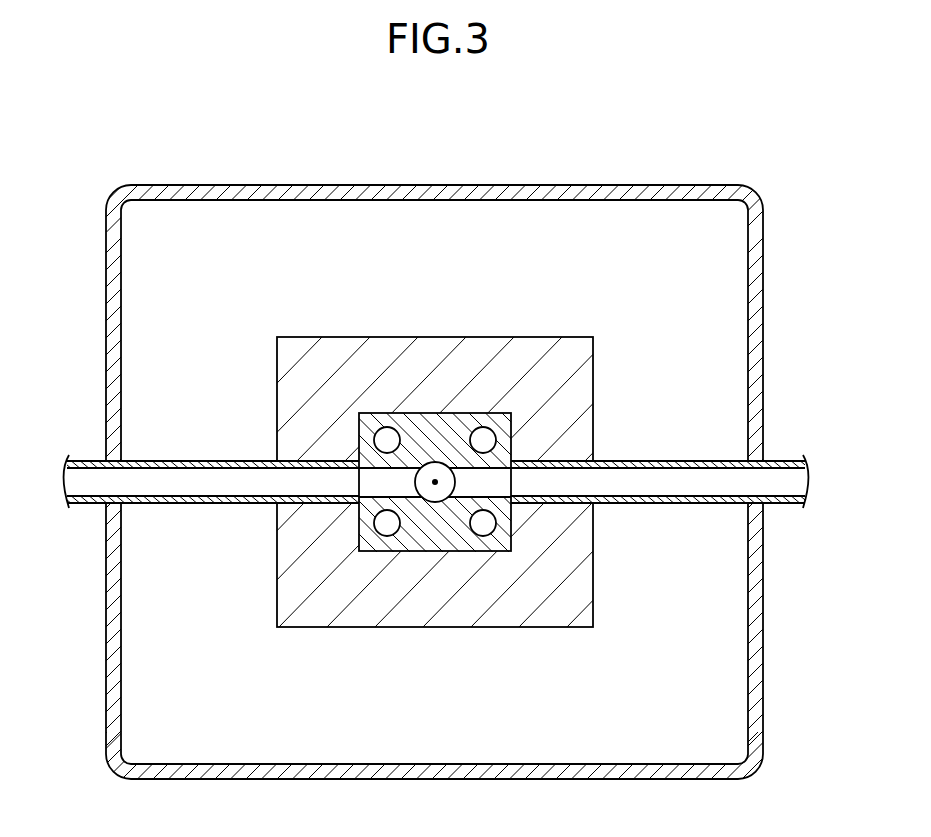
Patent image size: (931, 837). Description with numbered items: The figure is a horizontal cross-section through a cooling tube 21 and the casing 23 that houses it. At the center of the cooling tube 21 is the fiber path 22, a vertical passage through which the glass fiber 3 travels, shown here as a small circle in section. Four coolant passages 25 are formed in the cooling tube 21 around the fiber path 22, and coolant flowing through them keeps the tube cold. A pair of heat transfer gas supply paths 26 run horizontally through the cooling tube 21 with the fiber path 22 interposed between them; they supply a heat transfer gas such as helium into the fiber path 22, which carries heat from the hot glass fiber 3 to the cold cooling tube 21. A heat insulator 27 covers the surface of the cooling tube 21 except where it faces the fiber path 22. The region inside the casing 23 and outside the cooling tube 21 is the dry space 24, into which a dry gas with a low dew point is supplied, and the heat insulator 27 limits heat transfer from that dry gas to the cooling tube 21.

The glass fiber 3 is at (434, 480).
The cooling tube 21 is at (443, 537).
The fiber path 22 is at (443, 467).
The casing 23 is at (410, 185).
The dry space 24 is at (203, 337).
The coolant passages 25 is at (387, 432).
The heat transfer gas supply paths 26 is at (375, 482).
The heat insulator 27 is at (557, 358).